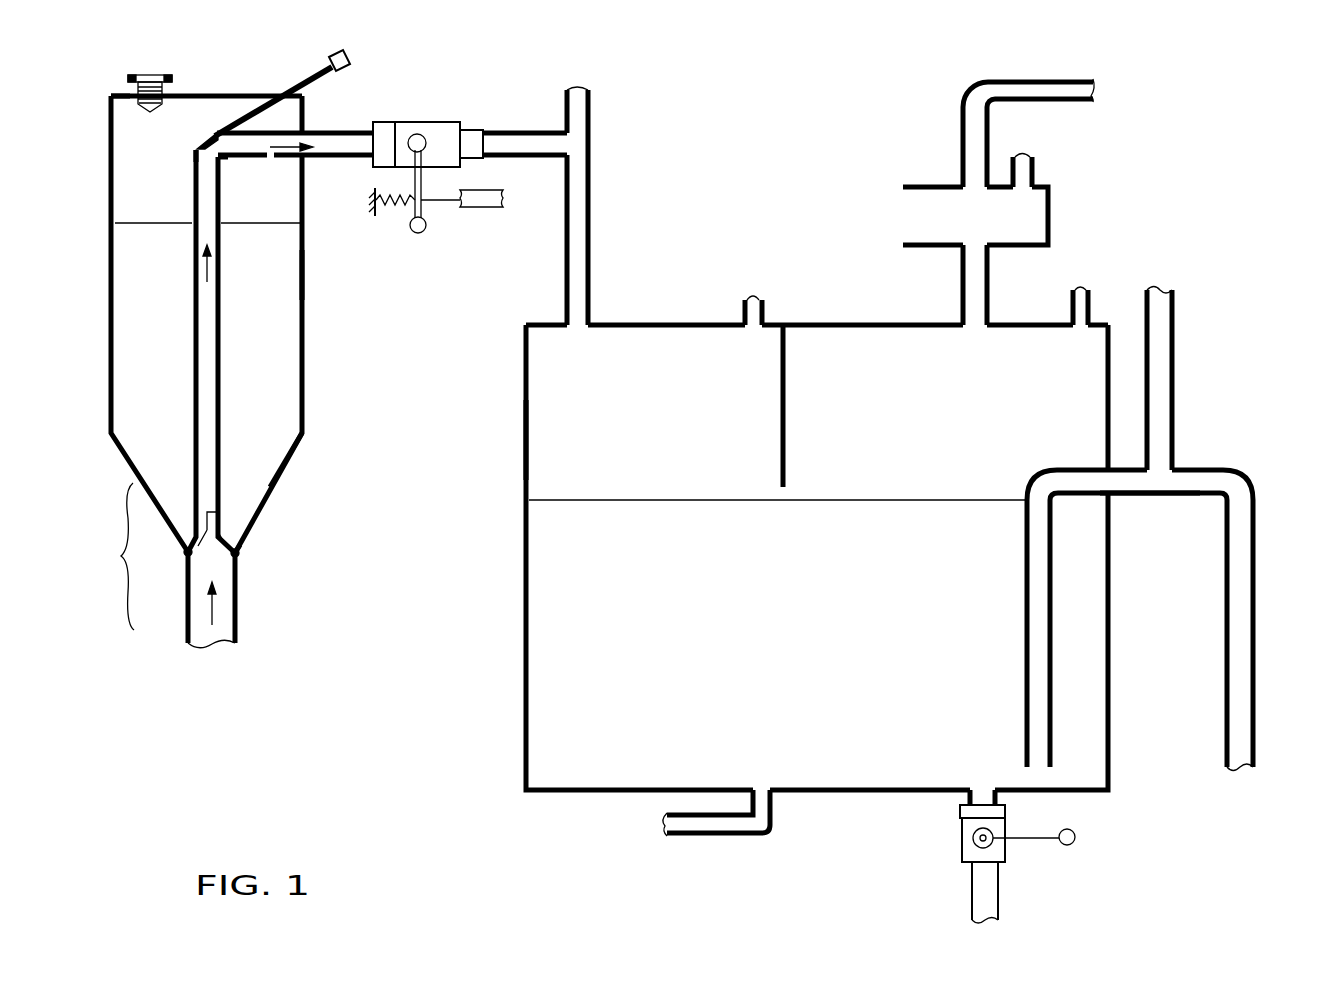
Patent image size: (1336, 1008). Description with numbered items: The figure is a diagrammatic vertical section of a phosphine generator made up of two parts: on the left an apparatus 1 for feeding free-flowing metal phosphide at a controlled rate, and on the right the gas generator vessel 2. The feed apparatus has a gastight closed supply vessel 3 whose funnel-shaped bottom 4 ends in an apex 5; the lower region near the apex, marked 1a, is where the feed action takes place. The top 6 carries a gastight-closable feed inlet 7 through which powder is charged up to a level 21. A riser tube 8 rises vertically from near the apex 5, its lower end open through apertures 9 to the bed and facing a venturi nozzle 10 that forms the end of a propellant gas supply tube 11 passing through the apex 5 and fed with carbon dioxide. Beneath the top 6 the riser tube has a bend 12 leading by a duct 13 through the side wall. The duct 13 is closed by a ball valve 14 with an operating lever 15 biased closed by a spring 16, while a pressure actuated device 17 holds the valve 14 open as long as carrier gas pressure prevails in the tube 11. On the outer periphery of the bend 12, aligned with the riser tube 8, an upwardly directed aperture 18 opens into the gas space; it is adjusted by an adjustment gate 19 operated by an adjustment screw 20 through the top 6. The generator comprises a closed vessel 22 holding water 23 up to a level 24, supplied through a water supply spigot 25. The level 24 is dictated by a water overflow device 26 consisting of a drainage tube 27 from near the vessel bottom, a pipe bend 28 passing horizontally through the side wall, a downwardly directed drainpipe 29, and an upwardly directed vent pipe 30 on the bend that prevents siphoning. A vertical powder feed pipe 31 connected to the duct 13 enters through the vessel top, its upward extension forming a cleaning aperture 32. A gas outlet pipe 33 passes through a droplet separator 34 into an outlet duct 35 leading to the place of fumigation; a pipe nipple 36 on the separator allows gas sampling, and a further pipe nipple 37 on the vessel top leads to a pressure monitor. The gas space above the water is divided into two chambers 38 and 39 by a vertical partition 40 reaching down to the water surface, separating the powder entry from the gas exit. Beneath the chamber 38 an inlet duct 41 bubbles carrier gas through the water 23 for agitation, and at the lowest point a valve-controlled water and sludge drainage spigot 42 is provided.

The apparatus for feeding particulate material 1 is at (308, 372).
The lower portion of separator 1a is at (109, 556).
The gas generator vessel 2 is at (523, 728).
The supply vessel 3 is at (308, 280).
The bottom 4 is at (273, 500).
The apex 5 is at (238, 553).
The top 6 is at (110, 95).
The feed inlet 7 is at (165, 92).
The riser tube 8 is at (193, 334).
The apertures 9 is at (204, 519).
The venturi nozzle 10 is at (188, 552).
The propellant gas supply tube 11 is at (240, 630).
The bend 12 is at (224, 160).
The duct 13 is at (328, 133).
The ball valve 14 is at (415, 122).
The operating lever 15 is at (428, 226).
The spring 16 is at (409, 210).
The pressure actuated device 17 is at (491, 208).
The aperture 18 is at (193, 150).
The adjustment gate 19 is at (205, 138).
The adjustment screw 20 is at (280, 97).
The level 21 is at (170, 226).
The closed vessel 22 is at (518, 440).
The water 23 is at (758, 645).
The water level 24 is at (700, 502).
The water supply spigot 25 is at (752, 300).
The water overflow device 26 is at (1230, 469).
The drainage tube 27 is at (1027, 655).
The pipe bend 28 is at (1140, 494).
The drainpipe 29 is at (1256, 603).
The vent pipe 30 is at (1175, 380).
The powder feed pipe 31 is at (590, 212).
The cleaning aperture 32 is at (583, 92).
The gas outlet pipe 33 is at (983, 288).
The droplet separator 34 is at (917, 217).
The outlet duct 35 is at (1032, 84).
The pipe nipple 36 is at (1036, 164).
The pipe nipple 37 is at (1079, 292).
The chamber 38 is at (633, 430).
The chamber 39 is at (936, 425).
The vertical partition 40 is at (787, 381).
The inlet duct 41 is at (710, 824).
The water and sludge drainage spigot 42 is at (960, 834).